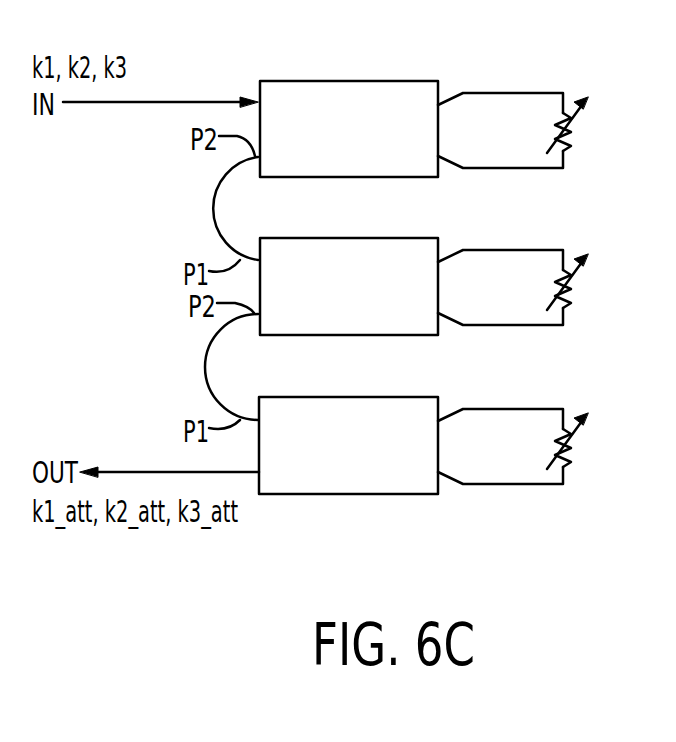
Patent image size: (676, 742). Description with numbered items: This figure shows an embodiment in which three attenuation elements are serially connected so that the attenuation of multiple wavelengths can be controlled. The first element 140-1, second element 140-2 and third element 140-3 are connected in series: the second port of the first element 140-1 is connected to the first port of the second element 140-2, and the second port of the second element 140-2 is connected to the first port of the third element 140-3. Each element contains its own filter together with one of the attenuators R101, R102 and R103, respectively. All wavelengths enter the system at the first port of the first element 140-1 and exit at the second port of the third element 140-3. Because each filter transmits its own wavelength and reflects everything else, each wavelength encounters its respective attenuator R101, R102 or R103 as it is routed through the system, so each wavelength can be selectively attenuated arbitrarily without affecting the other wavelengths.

The first element 140-1 is at (360, 81).
The second element 140-2 is at (363, 238).
The third element 140-3 is at (363, 397).
The attenuator R101 is at (534, 130).
The attenuator R102 is at (534, 287).
The attenuator R103 is at (534, 446).